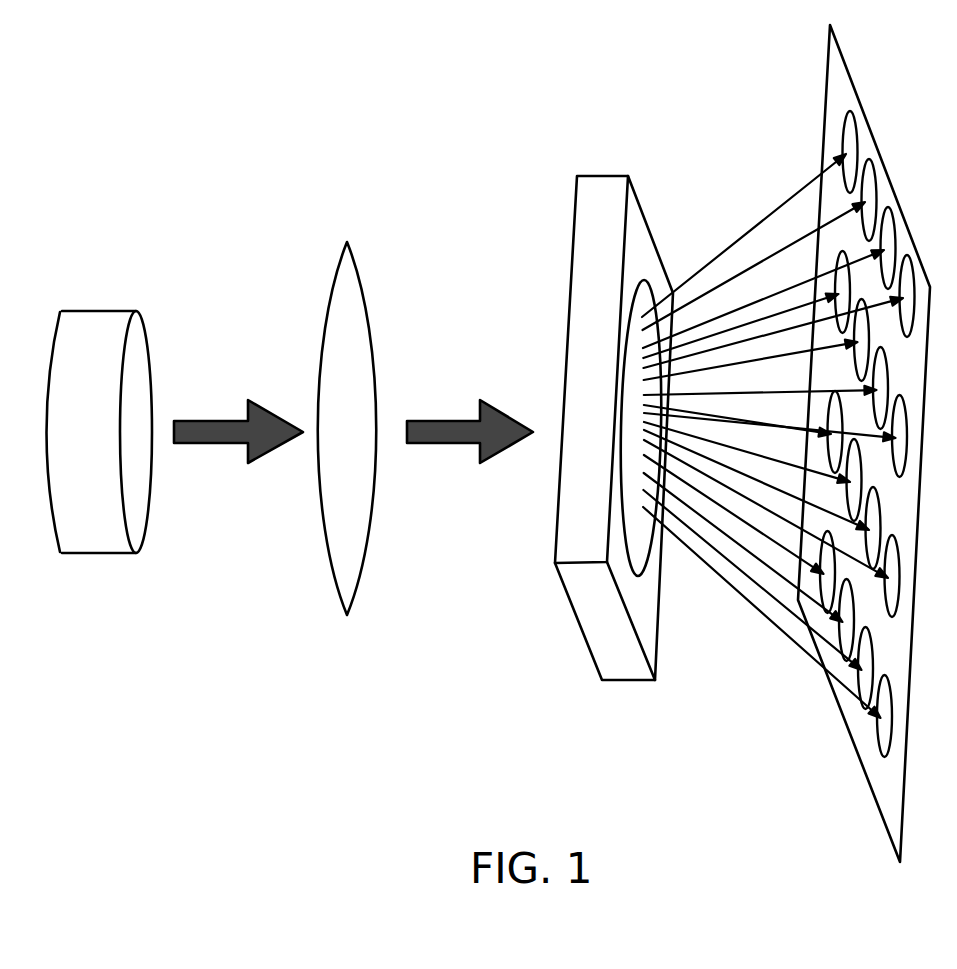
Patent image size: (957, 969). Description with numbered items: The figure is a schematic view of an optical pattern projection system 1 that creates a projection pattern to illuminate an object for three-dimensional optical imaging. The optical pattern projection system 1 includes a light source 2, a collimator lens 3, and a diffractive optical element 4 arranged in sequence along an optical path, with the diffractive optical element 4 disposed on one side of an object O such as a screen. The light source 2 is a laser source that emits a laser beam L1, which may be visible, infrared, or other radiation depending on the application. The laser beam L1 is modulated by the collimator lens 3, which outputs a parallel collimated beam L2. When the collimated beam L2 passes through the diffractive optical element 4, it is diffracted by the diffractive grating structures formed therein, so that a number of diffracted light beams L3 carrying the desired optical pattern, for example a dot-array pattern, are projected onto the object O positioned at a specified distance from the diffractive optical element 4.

The optical pattern projection system 1 is at (215, 118).
The light source 2 is at (98, 310).
The collimator lens 3 is at (347, 241).
The diffractive optical element 4 is at (600, 176).
The laser beam L1 is at (211, 421).
The collimated beam L2 is at (442, 421).
The diffracted light beams L3 is at (745, 273).
The object O is at (842, 82).